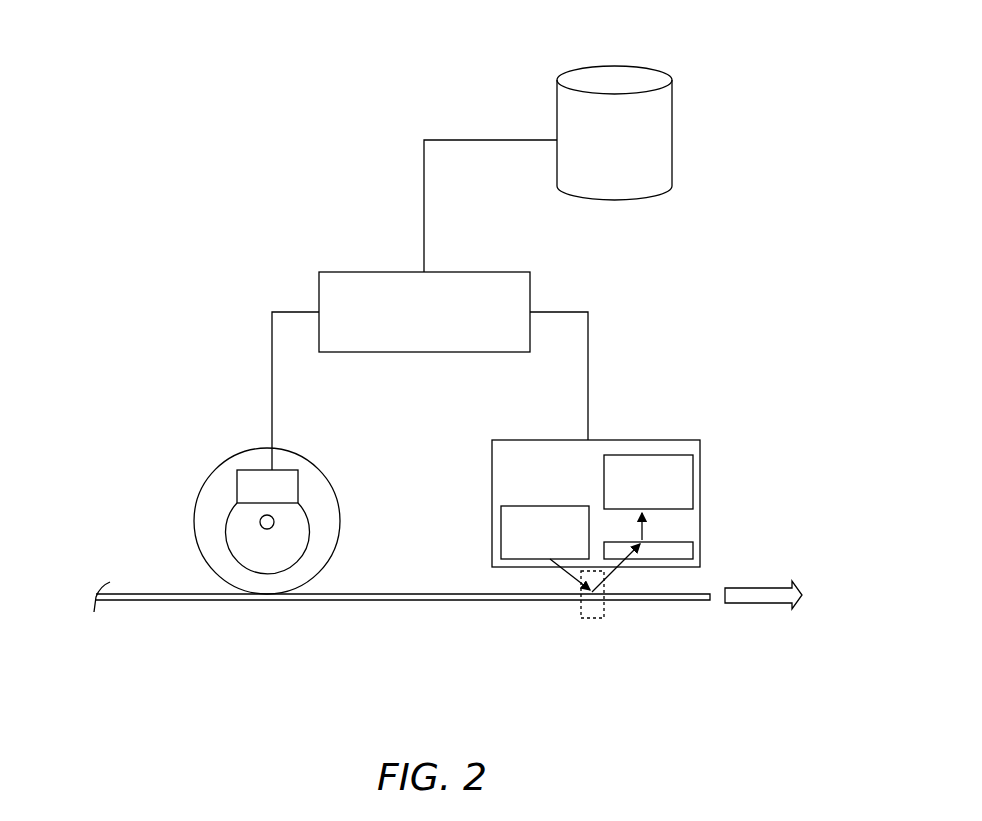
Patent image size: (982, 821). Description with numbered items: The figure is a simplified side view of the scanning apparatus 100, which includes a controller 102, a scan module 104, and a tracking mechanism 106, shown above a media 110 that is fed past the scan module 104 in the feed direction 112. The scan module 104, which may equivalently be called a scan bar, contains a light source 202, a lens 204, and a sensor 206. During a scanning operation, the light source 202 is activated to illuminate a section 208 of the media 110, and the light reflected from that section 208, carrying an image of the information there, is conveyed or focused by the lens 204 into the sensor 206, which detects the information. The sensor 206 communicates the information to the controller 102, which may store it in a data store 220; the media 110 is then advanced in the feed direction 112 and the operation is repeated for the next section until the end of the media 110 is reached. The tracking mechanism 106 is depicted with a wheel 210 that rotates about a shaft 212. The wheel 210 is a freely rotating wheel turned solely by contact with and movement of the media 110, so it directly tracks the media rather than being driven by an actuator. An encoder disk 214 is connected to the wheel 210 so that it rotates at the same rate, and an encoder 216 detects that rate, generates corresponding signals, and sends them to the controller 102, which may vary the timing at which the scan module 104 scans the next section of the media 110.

The scanning apparatus 100 is at (425, 356).
The controller 102 is at (430, 371).
The scan module 104 is at (552, 438).
The tracking mechanism 106 is at (153, 456).
The media 110 is at (180, 601).
The feed direction 112 is at (773, 603).
The light source 202 is at (530, 559).
The lens 204 is at (693, 553).
The sensor 206 is at (693, 478).
The section 208 is at (597, 618).
The wheel 210 is at (308, 585).
The shaft 212 is at (260, 522).
The encoder disk 214 is at (308, 536).
The encoder 216 is at (298, 490).
The data store 220 is at (548, 169).